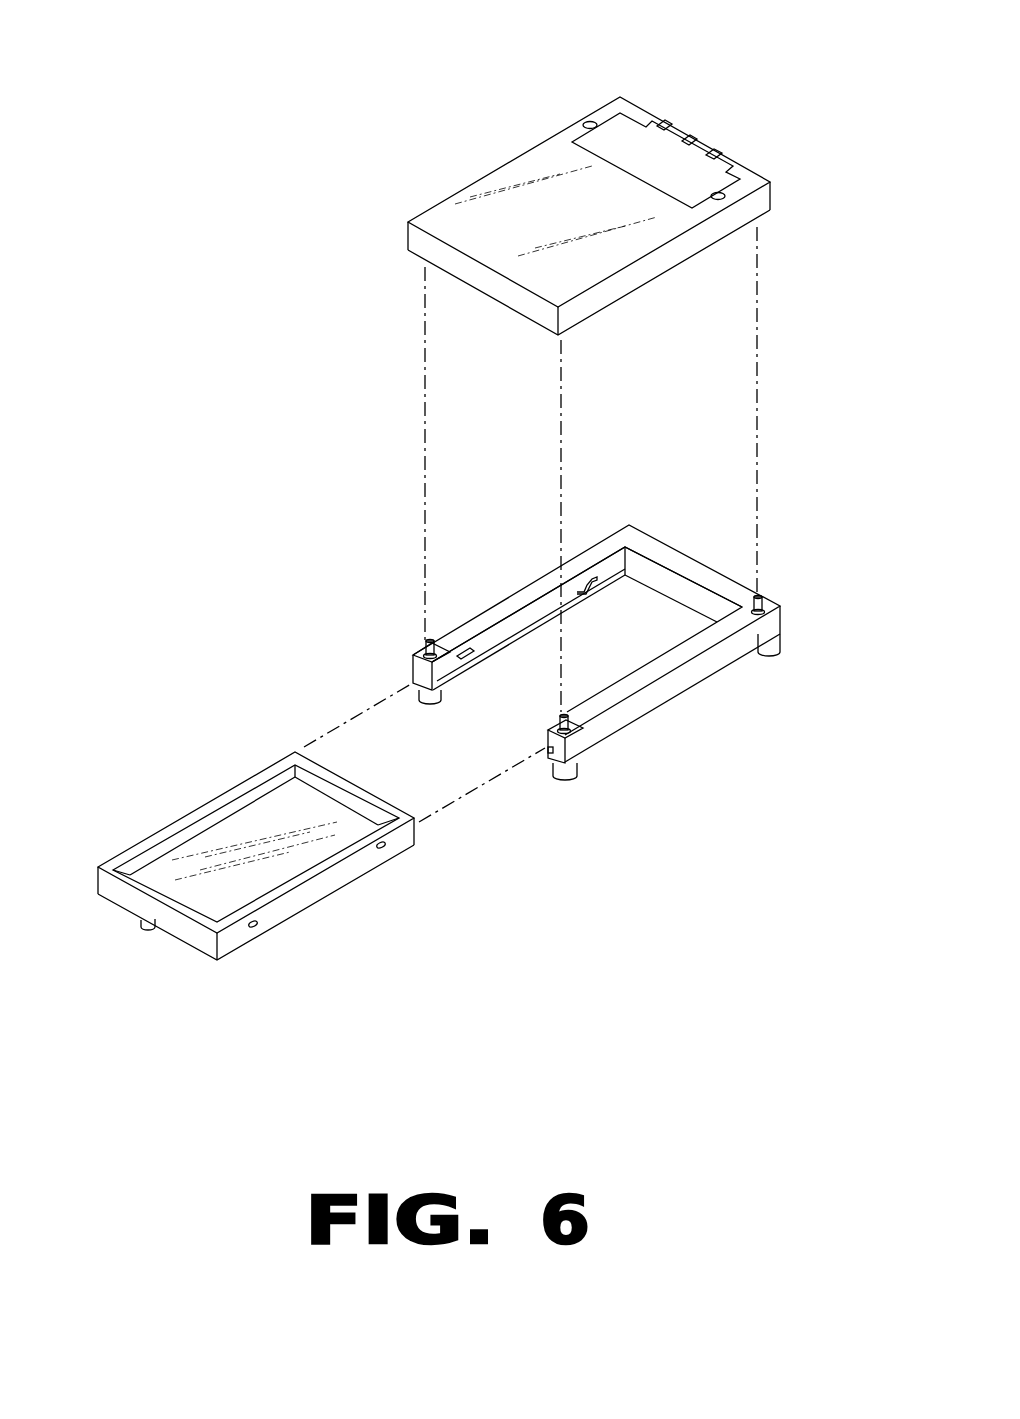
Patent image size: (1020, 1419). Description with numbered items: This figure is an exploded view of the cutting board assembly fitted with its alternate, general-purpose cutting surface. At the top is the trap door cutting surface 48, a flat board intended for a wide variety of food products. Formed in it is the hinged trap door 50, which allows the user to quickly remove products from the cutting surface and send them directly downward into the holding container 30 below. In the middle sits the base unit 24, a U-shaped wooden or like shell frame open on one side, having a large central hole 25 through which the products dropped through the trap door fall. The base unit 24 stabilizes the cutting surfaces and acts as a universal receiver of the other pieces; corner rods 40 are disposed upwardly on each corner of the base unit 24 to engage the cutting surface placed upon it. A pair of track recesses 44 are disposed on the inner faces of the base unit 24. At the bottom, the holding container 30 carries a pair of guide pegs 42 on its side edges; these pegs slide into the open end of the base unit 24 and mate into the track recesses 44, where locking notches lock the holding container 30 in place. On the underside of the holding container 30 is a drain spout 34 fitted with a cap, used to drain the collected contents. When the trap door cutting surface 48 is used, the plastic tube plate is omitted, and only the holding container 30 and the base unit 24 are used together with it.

The base unit 24 is at (715, 570).
The central hole 25 is at (636, 652).
The holding container 30 is at (352, 825).
The drain spout 34 is at (147, 928).
The corner rods 40 is at (767, 597).
The guide pegs 42 is at (260, 927).
The track recesses 44 is at (512, 633).
The trap door cutting surface 48 is at (448, 226).
The hinged trap door 50 is at (627, 117).